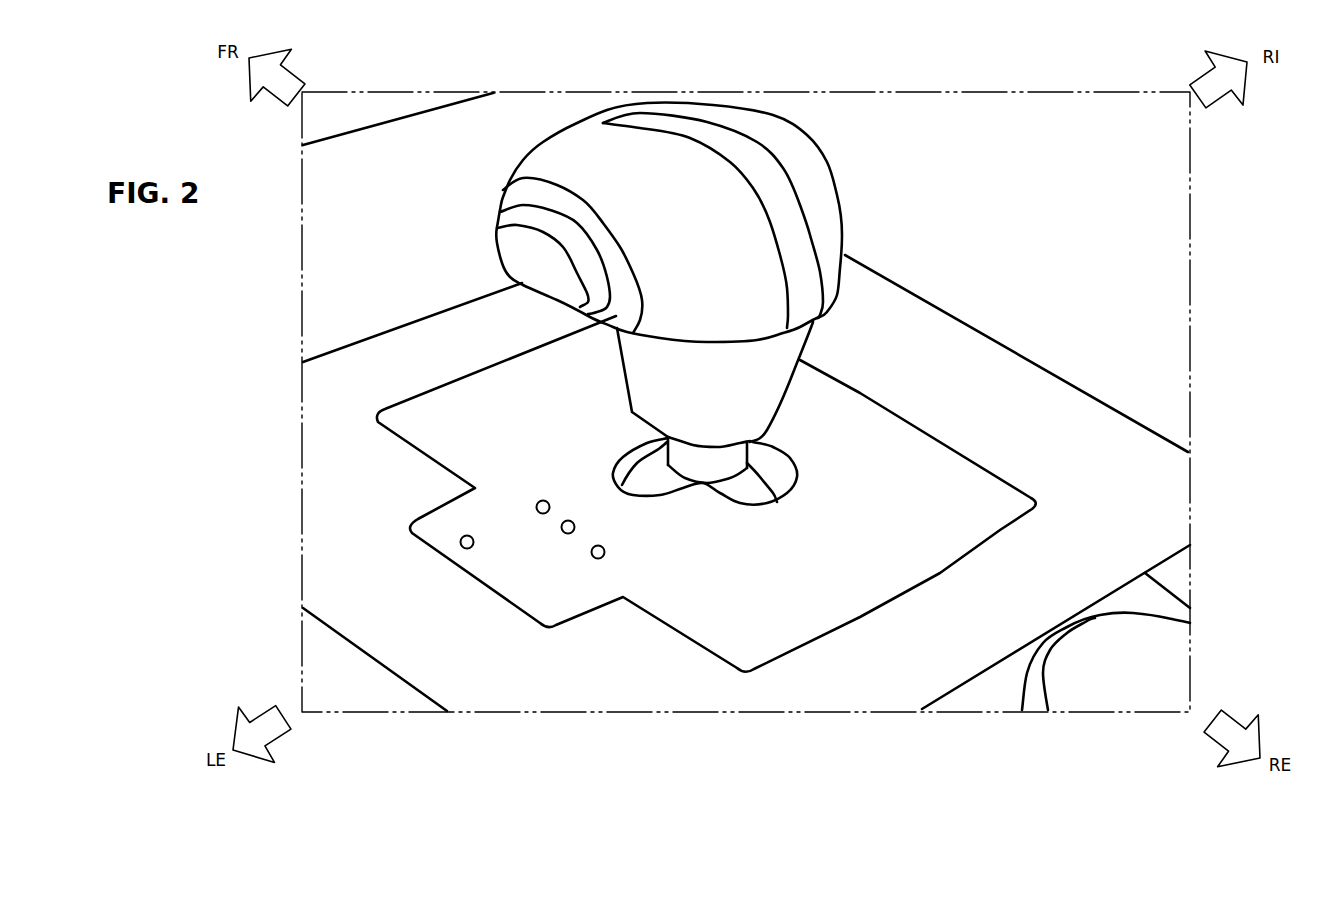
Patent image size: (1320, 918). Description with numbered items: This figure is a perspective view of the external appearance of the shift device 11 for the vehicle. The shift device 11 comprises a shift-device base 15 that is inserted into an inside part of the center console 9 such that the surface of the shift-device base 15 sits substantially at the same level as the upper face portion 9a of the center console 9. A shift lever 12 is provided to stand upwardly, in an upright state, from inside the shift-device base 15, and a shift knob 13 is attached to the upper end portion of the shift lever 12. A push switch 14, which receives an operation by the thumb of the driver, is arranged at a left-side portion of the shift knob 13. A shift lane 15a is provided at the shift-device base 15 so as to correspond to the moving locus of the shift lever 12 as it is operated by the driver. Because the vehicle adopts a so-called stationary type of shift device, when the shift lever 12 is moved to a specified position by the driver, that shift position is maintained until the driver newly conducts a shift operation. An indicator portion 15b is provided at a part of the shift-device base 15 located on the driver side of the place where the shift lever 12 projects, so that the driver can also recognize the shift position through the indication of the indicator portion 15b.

The center console 9 is at (1147, 505).
The upper face portion 9a is at (1032, 420).
The shift device 11 is at (717, 90).
The shift lever 12 is at (713, 462).
The shift knob 13 is at (602, 150).
The push switch 14 is at (525, 249).
The shift-device base 15 is at (802, 600).
The shift lane 15a is at (790, 455).
The indicator portion 15b is at (517, 553).